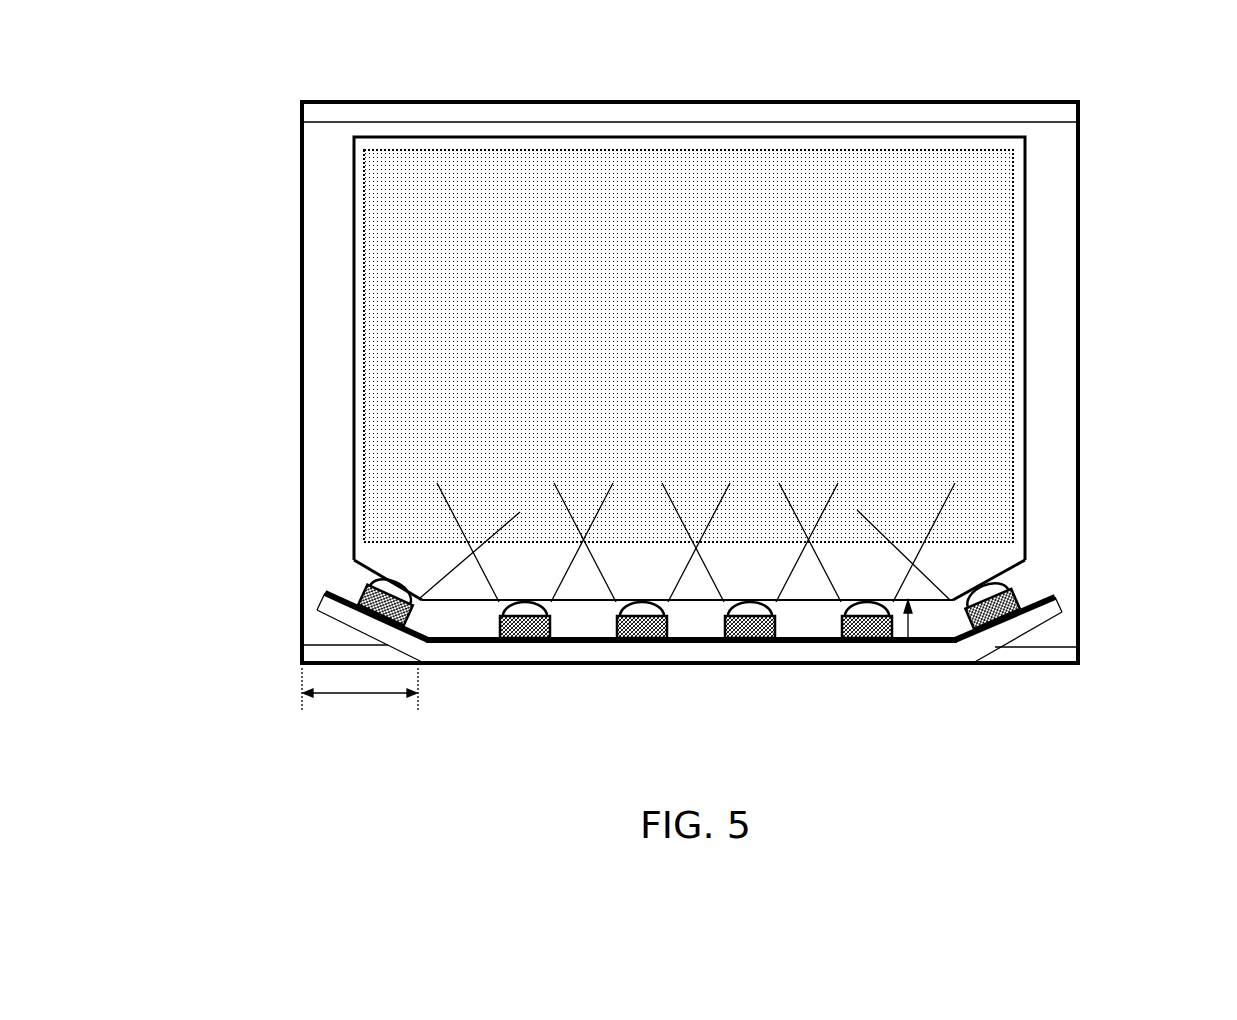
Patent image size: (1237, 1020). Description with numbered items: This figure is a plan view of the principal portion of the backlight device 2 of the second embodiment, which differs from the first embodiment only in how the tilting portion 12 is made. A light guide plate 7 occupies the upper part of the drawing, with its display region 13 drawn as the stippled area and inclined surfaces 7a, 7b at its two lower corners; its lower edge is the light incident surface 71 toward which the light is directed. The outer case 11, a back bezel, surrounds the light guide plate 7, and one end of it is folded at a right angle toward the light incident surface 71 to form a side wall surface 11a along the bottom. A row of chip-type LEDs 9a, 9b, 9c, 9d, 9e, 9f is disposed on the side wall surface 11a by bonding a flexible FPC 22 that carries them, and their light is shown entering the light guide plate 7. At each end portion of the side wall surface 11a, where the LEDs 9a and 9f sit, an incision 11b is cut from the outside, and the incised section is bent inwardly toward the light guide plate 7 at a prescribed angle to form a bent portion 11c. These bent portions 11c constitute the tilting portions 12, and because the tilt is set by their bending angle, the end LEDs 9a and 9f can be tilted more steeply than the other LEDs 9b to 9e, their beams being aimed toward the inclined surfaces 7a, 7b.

The backlight device 2 is at (694, 86).
The light guide plate 7 is at (1022, 467).
The inclined surface 7a is at (377, 560).
The inclined surface 7b is at (1004, 556).
The chip-type LED 9a is at (357, 595).
The chip-type LED 9b is at (505, 641).
The chip-type LED 9c is at (620, 641).
The chip-type LED 9d is at (730, 641).
The chip-type LED 9e is at (840, 641).
The chip-type LED 9f is at (993, 632).
The outer case 11 is at (325, 137).
The side wall surface 11a is at (635, 650).
The incision 11b is at (355, 697).
The bent portion 11c is at (316, 613).
The tilting portion 12 is at (346, 638).
The display region 13 is at (978, 372).
The FPC 22 is at (1020, 622).
The light incident surface 71 is at (908, 641).